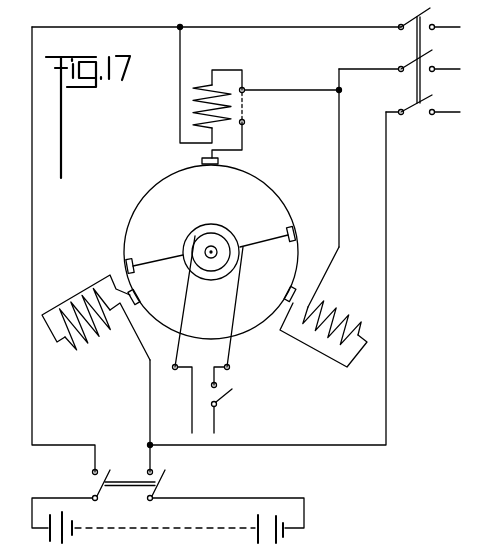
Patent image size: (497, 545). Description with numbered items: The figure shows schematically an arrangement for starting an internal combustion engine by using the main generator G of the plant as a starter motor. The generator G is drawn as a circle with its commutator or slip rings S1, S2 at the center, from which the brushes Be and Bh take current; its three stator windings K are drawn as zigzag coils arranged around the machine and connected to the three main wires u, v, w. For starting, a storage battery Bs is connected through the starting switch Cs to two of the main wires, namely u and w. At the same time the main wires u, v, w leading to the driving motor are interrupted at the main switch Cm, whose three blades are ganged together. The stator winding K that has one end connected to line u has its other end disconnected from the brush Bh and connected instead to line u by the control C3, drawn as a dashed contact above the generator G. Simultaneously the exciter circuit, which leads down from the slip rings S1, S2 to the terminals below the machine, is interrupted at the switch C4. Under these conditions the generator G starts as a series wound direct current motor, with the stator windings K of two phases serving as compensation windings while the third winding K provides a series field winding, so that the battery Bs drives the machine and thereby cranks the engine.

The generator G is at (250, 203).
The slip ring / commutator outer ring S1 is at (193, 233).
The slip ring / commutator inner ring S2 is at (211, 270).
The brushes for excitation circuit Be is at (211, 250).
The brush Bh is at (139, 318).
The stator winding K is at (204, 199).
The control C3 is at (290, 109).
The exciter circuit interrupter C4 is at (230, 408).
The main switch Cm is at (399, 81).
The starting switch Cs is at (133, 474).
The storage battery Bs is at (168, 520).
The main wire u is at (421, 19).
The main wire v is at (399, 61).
The main wire w is at (421, 105).